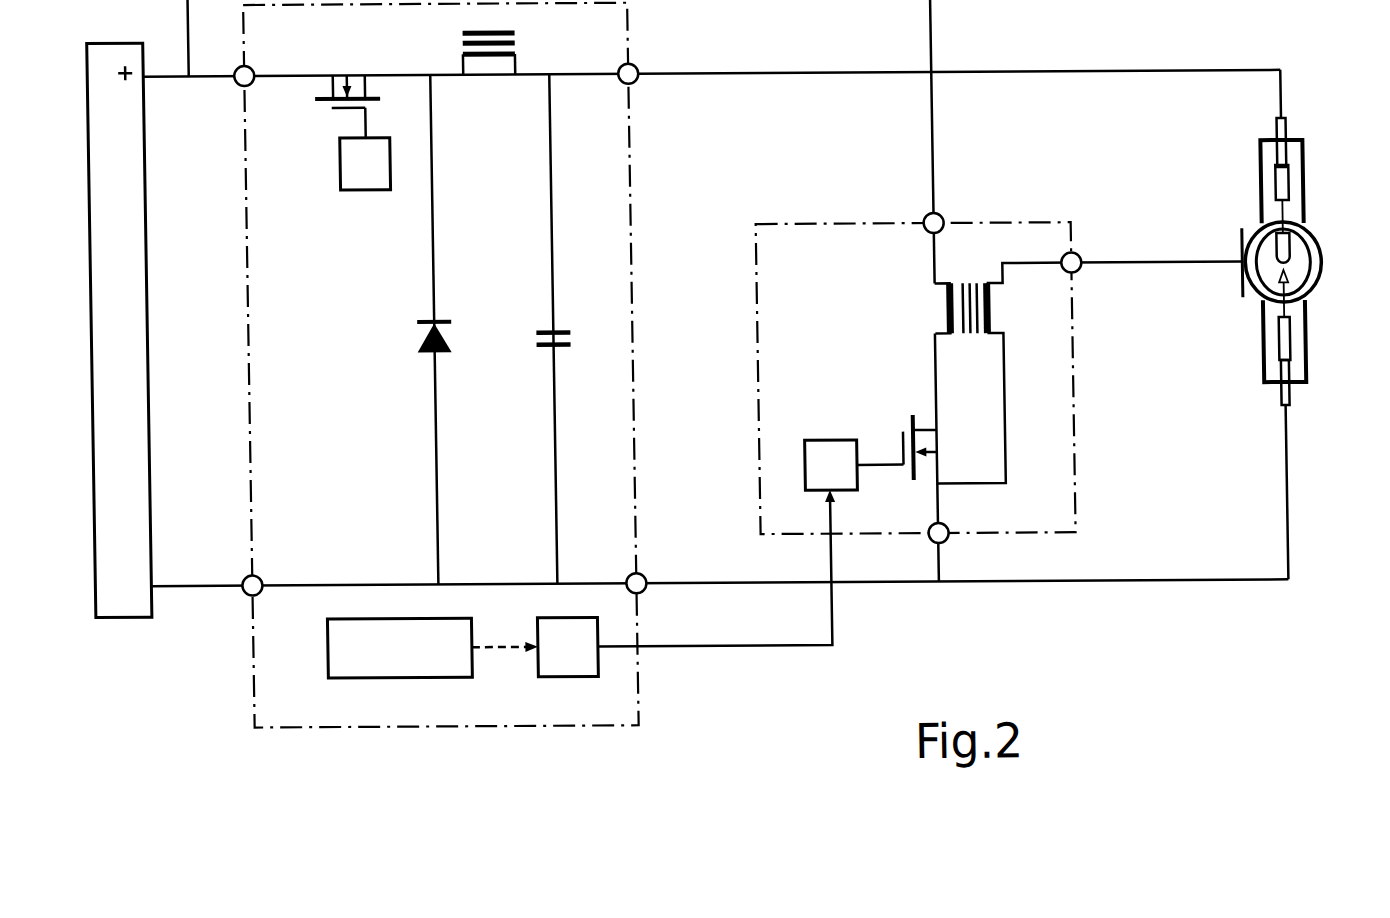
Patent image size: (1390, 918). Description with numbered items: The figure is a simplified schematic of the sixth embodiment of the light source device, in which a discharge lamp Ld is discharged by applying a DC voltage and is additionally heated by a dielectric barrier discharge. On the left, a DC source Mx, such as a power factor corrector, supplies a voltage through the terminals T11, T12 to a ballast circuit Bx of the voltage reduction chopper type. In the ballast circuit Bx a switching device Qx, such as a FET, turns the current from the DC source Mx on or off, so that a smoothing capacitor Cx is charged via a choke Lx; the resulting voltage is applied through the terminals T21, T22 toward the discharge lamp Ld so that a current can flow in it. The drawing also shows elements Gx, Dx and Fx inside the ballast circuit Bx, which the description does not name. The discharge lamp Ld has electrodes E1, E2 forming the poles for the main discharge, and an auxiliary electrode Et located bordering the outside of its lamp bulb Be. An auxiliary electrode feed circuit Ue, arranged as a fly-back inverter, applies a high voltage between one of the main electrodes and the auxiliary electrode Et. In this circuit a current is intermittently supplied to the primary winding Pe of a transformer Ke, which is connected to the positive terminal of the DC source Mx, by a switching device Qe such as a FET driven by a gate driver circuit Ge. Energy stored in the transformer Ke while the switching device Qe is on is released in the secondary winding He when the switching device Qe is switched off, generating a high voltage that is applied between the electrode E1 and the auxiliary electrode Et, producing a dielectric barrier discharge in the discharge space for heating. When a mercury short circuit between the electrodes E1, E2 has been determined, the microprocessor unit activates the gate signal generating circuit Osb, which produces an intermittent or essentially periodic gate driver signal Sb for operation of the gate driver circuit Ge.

The DC source Mx is at (110, 618).
The terminal T11 is at (238, 84).
The terminal T12 is at (233, 576).
The terminal T21 is at (640, 86).
The terminal T22 is at (636, 580).
The ballast circuit Bx is at (626, 711).
The switching device Qx is at (318, 104).
The gate driver of switching transistor Gx is at (364, 194).
The choke Lx is at (494, 61).
The diode of step-up converter Dx is at (446, 355).
The smoothing capacitor Cx is at (564, 352).
The control / frequency setting unit Fx is at (318, 652).
The gate signal generating circuit Osb is at (528, 671).
The gate driver signal Sb is at (783, 652).
The auxiliary electrode feed circuit Ue is at (808, 228).
The primary winding Pe is at (941, 316).
The secondary winding He is at (985, 313).
The transformer Ke is at (964, 339).
The gate driver circuit Ge is at (826, 443).
The switching device Qe is at (906, 420).
The auxiliary electrode Et is at (1238, 240).
The electrode E2 is at (1285, 256).
The discharge lamp Ld is at (1317, 268).
The electrode E1 is at (1284, 281).
The lamp bulb Be is at (1256, 300).